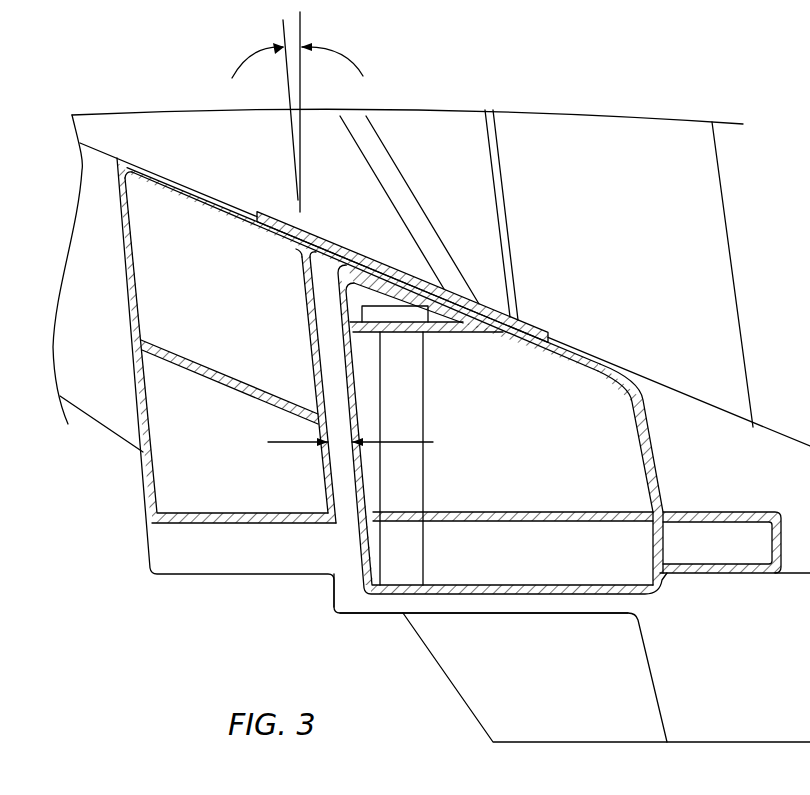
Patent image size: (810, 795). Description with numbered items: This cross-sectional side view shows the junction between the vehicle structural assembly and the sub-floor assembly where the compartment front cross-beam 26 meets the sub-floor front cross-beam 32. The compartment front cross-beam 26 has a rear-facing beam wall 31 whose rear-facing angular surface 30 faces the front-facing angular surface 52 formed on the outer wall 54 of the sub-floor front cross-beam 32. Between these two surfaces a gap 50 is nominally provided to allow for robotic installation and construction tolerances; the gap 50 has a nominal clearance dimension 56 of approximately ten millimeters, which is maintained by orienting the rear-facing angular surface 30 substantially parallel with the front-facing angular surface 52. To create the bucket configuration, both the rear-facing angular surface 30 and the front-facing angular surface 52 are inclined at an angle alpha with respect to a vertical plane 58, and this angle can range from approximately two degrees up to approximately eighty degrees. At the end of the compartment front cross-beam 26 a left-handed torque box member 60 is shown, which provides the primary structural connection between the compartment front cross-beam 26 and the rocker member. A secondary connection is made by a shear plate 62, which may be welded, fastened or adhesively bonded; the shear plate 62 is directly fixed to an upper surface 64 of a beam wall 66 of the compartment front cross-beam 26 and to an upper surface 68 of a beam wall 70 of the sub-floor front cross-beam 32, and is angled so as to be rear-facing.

The compartment front cross-beam 26 is at (140, 417).
The rear-facing angular surface 30 is at (343, 478).
The rear-facing beam wall 31 is at (312, 303).
The sub-floor front cross-beam 32 is at (656, 466).
The gap 50 is at (327, 307).
The front-facing angular surface 52 is at (352, 533).
The outer wall 54 is at (356, 389).
The nominal clearance dimension 56 is at (268, 442).
The vertical plane 58 is at (300, 97).
The left-handed torque box member 60 is at (378, 616).
The shear plate 62 is at (372, 265).
The upper surface 64 is at (162, 170).
The beam wall 66 is at (190, 188).
The upper surface 68 is at (582, 344).
The beam wall 70 is at (610, 365).